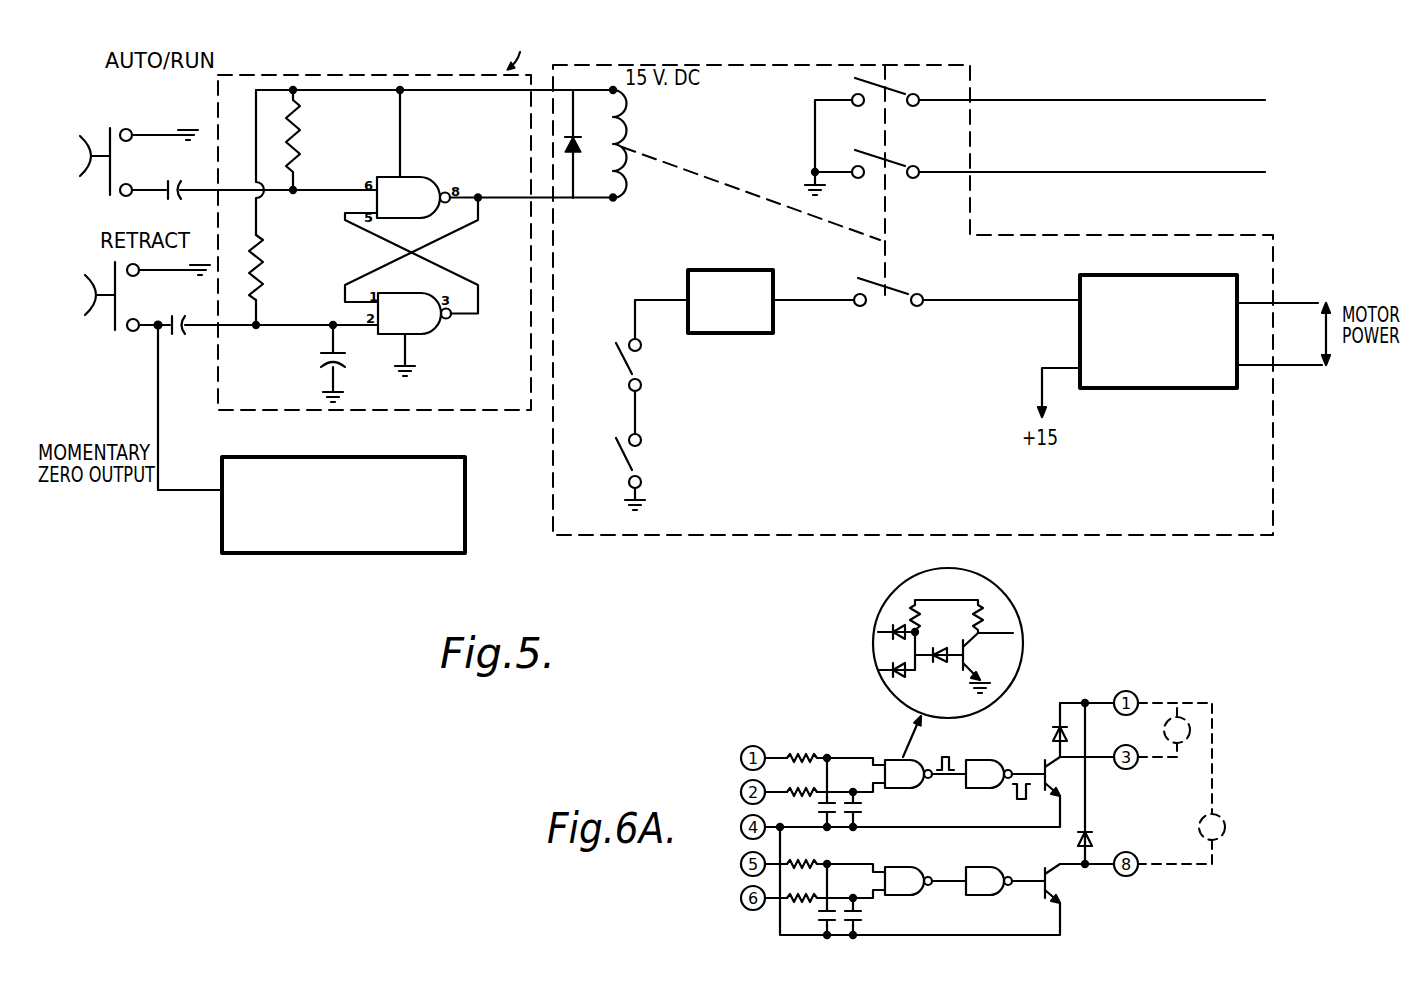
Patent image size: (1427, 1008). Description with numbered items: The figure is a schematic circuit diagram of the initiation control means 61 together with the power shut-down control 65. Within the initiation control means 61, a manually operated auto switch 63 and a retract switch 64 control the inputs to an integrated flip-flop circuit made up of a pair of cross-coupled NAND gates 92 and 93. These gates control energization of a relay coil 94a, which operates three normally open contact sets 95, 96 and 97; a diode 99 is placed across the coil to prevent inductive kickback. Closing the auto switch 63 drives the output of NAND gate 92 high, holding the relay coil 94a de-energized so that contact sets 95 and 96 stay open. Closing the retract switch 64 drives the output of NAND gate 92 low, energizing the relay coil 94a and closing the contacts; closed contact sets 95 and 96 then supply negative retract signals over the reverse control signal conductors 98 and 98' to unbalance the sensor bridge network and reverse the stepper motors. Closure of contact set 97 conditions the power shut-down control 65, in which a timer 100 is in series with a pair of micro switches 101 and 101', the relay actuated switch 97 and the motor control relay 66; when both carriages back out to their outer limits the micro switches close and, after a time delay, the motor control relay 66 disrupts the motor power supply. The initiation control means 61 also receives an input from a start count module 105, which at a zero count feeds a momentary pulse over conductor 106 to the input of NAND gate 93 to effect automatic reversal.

The initiation control means 61 is at (487, 412).
The auto switch 63 is at (127, 121).
The retract switch 64 is at (130, 338).
The NAND gate 92 is at (432, 177).
The NAND gate 93 is at (430, 334).
The diode 99 is at (580, 158).
The relay coil 94a is at (617, 138).
The contact set 95 is at (905, 92).
The contact set 96 is at (905, 164).
The contact set 97 is at (905, 290).
The conductor 98 is at (1108, 74).
The reverse control signal conductor 98' is at (1109, 147).
The timer 100 is at (750, 326).
The micro switch 101 is at (669, 386).
The micro switch 101' is at (674, 472).
The motor control relay 66 is at (1172, 372).
The power shut-down control 65 is at (730, 541).
The start count module 105 is at (395, 557).
The conductor 106 is at (158, 403).